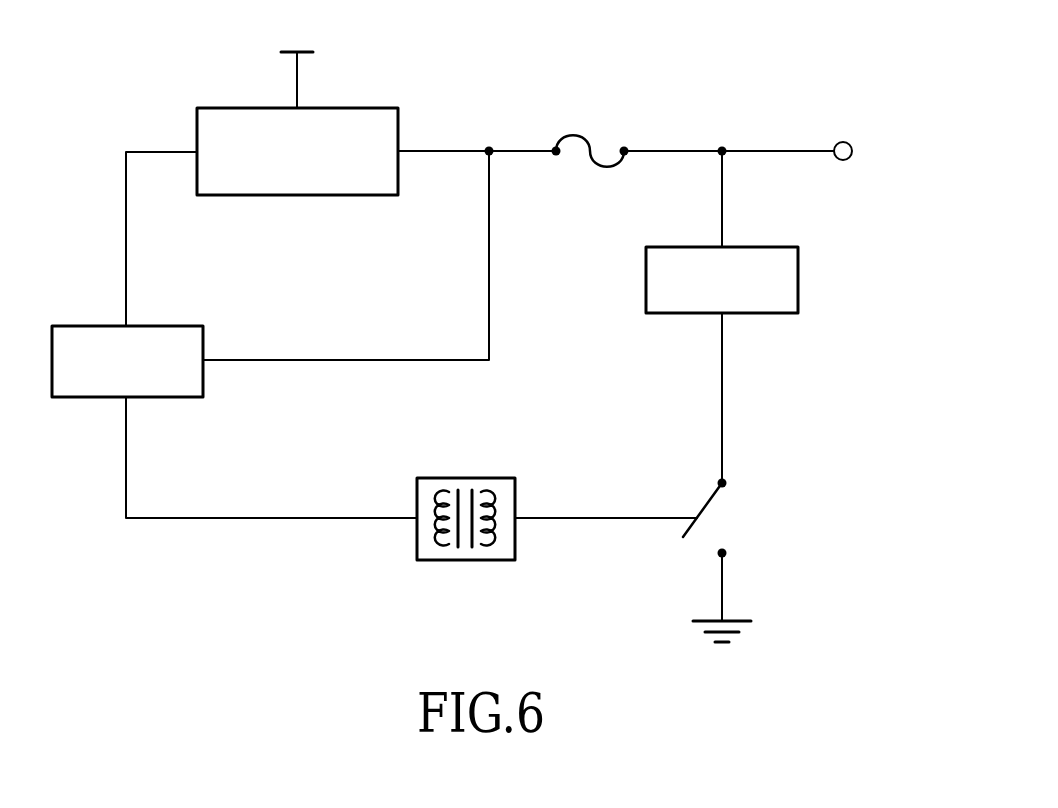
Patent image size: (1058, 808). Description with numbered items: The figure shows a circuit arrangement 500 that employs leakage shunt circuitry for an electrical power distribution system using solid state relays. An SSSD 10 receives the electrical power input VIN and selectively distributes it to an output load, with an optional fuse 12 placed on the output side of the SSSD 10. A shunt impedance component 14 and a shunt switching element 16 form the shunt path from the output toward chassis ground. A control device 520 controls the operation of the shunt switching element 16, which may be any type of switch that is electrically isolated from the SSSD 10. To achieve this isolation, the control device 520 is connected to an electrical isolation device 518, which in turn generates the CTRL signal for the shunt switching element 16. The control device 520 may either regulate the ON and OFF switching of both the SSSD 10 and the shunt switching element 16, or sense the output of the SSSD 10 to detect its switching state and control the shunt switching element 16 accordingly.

The circuit arrangement 500 is at (156, 44).
The SSSD 10 is at (267, 196).
The fuse 12 is at (594, 150).
The shunt impedance component 14 is at (798, 276).
The shunt switching element 16 is at (723, 517).
The electrical isolation device 518 is at (495, 478).
The control device 520 is at (203, 388).